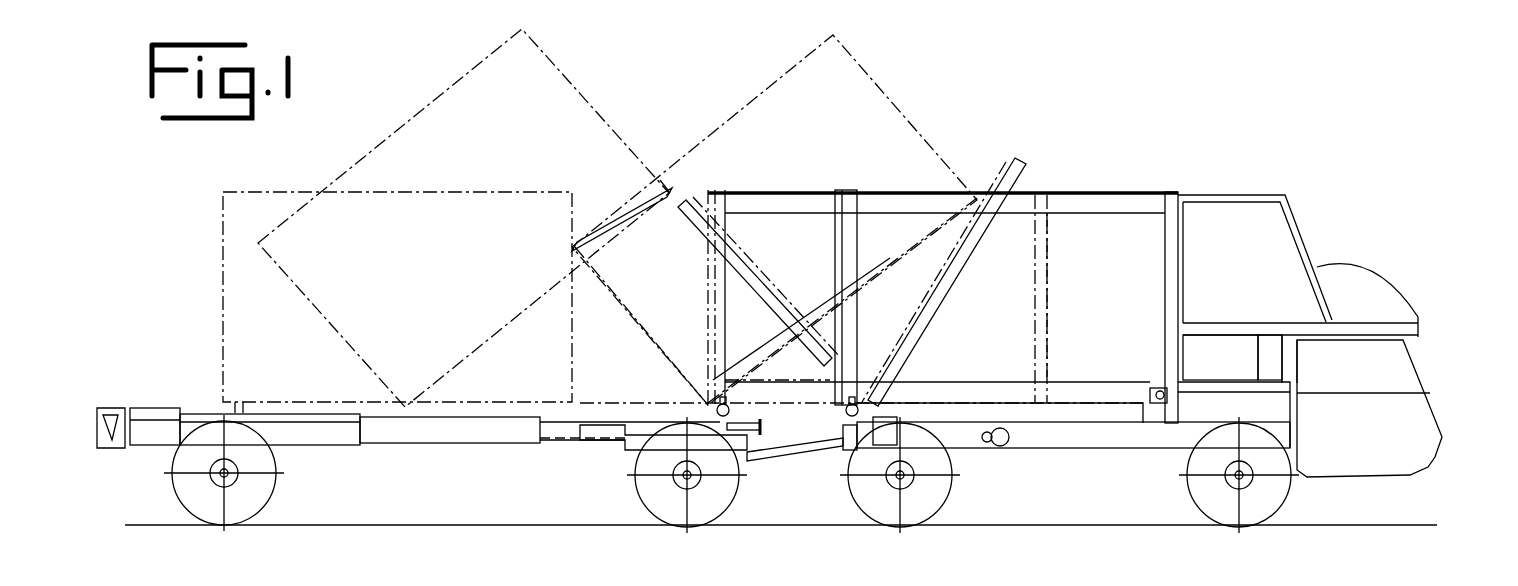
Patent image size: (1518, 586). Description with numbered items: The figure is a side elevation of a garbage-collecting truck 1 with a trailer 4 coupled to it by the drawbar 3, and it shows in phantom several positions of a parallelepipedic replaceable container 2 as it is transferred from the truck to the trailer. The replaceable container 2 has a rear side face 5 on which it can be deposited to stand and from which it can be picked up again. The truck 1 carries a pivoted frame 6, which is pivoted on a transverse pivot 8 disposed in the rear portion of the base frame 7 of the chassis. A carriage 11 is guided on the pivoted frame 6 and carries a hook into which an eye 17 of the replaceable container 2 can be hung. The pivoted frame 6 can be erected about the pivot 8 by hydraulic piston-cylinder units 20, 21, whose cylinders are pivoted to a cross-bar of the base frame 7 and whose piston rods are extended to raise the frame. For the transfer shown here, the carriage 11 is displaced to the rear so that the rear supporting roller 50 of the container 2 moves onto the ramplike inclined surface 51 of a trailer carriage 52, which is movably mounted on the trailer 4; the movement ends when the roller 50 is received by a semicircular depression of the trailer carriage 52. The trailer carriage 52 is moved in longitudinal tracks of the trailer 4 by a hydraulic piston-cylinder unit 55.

The garbage-collecting truck 1 is at (1320, 233).
The replaceable container 2 is at (1067, 237).
The drawbar 3 is at (802, 446).
The trailer 4 is at (196, 392).
The rear side face 5 is at (835, 250).
The pivoted frame 6 is at (1060, 405).
The base frame 7 is at (1047, 440).
The transverse pivot 8 is at (905, 400).
The carriage 11 is at (1170, 398).
The eye 17 is at (1165, 392).
The hydraulic piston-cylinder unit 20 is at (960, 403).
The hydraulic piston-cylinder unit 21 is at (960, 403).
The rear supporting roller 50 is at (870, 412).
The ramplike inclined surface 51 is at (752, 410).
The trailer carriage 52 is at (670, 415).
The hydraulic piston-cylinder unit 55 is at (740, 380).